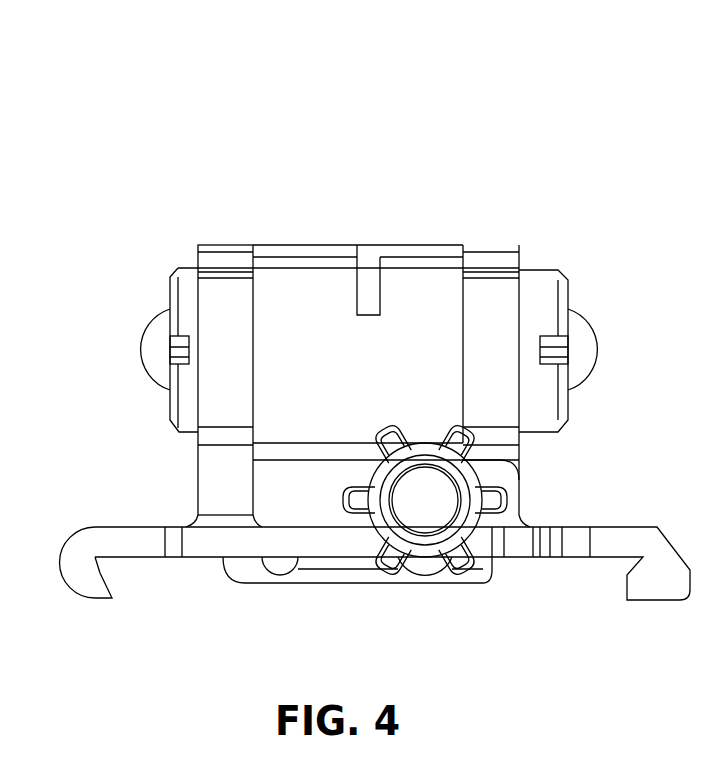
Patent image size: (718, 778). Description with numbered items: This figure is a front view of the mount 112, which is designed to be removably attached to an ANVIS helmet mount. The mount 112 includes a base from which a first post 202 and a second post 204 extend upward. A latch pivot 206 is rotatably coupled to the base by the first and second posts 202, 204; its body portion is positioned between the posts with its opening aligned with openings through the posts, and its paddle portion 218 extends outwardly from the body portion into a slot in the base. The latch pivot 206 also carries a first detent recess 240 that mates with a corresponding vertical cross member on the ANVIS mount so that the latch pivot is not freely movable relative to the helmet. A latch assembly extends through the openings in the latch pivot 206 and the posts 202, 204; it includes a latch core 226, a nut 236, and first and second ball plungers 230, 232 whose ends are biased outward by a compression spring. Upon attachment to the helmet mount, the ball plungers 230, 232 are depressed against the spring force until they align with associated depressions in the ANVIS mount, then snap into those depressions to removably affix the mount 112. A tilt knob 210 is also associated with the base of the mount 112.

The mount 112 is at (354, 132).
The first post 202 is at (232, 305).
The second post 204 is at (489, 305).
The latch pivot 206 is at (312, 250).
The first detent recess 240 is at (372, 303).
The latch core 226 is at (188, 285).
The nut 236 is at (540, 298).
The first ball plunger 230 is at (145, 348).
The second ball plunger 232 is at (588, 350).
The paddle portion 218 is at (298, 488).
The tilt knob 210 is at (425, 508).